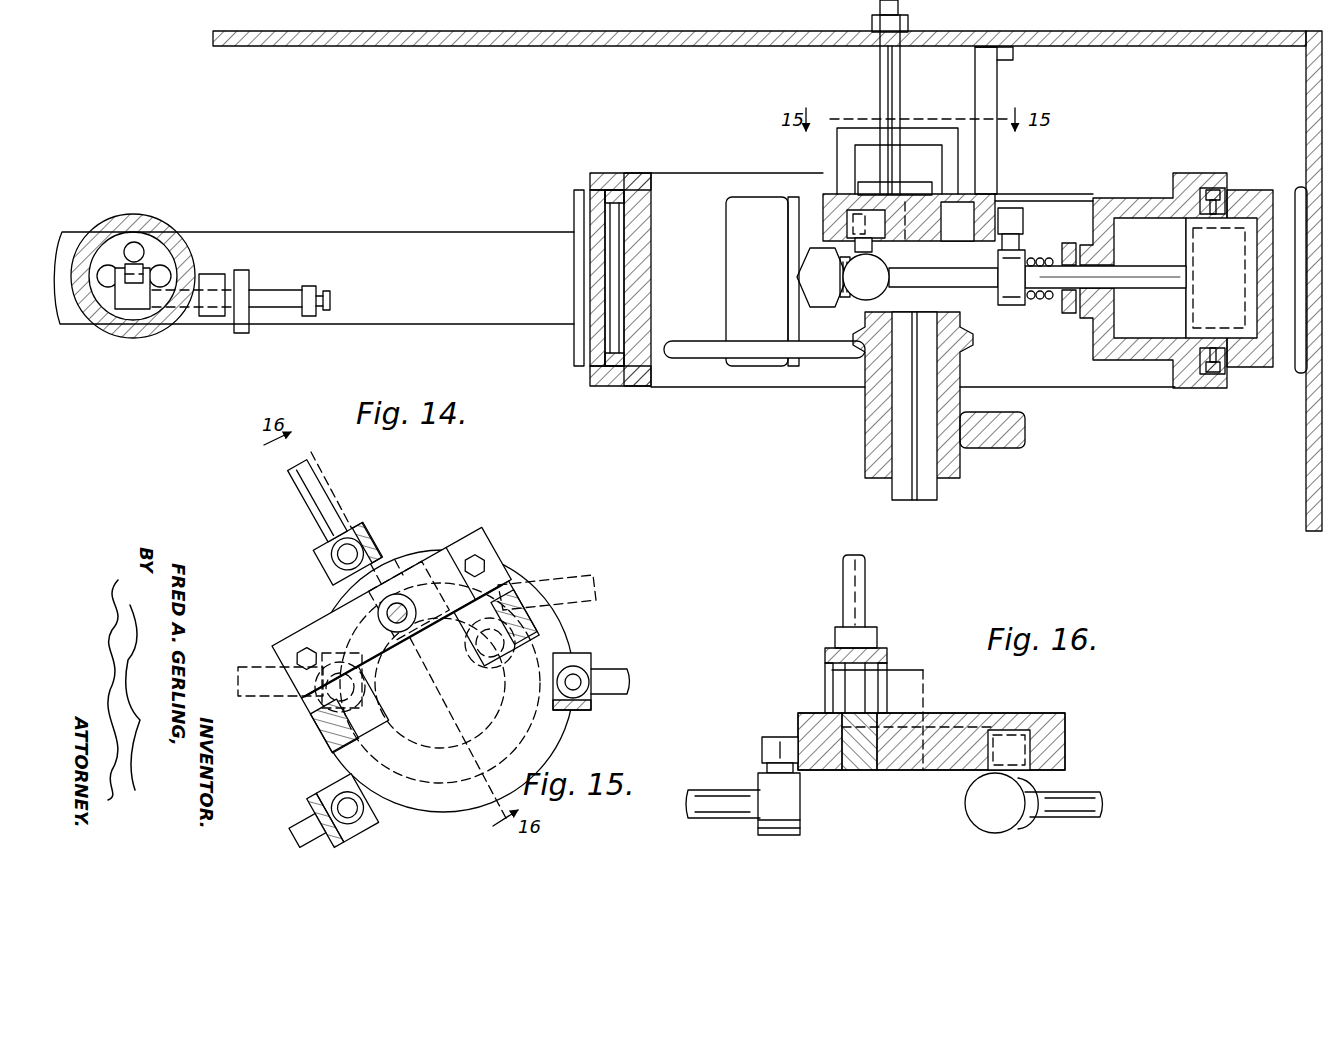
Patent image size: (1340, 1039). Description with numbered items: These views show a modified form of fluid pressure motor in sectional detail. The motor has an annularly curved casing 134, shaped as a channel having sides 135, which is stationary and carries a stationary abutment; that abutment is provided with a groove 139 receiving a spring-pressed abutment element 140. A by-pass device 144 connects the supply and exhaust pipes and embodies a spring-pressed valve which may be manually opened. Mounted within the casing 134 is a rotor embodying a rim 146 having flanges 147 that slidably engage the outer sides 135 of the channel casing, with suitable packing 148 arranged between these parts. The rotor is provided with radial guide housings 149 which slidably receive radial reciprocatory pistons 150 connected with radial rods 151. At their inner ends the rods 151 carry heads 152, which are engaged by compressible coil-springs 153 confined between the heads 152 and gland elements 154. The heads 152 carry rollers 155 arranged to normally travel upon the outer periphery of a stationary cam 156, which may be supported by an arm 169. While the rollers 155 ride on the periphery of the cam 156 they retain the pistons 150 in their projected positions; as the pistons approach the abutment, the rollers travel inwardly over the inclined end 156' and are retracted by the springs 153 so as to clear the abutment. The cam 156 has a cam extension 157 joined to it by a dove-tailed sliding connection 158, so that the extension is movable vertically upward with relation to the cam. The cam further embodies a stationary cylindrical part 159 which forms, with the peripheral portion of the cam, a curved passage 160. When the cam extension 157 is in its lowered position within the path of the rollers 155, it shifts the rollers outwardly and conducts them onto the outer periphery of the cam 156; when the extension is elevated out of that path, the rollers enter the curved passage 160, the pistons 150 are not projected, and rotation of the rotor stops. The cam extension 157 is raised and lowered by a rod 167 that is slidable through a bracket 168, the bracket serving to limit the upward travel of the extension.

In FIG. 14, the annularly curved casing 134 is at (1288, 330).
In FIG. 14, the sides of the casing 135 is at (1240, 197).
In FIG. 14, the groove 139 is at (610, 262).
In FIG. 14, the spring-pressed abutment element 140 is at (619, 296).
In FIG. 14, the by-pass device 144 is at (138, 221).
In FIG. 14, the rim 146 is at (640, 291).
In FIG. 14, the flanges 147 is at (608, 180).
In FIG. 14, the packing 148 is at (593, 377).
In FIG. 14, the radial guide housings 149 is at (1137, 350).
In FIG. 14, the radial reciprocatory pistons 150 is at (1221, 278).
In FIG. 14, the radial rods 151 is at (1150, 282).
In FIG. 15, the radial rods 151 is at (311, 512).
In FIG. 16, the radial rods 151 is at (703, 795).
In FIG. 14, the heads 152 is at (1000, 265).
In FIG. 15, the heads 152 is at (338, 575).
In FIG. 16, the heads 152 is at (800, 823).
In FIG. 14, the compressible coil-springs 153 is at (852, 284).
In FIG. 14, the gland elements 154 is at (1066, 300).
In FIG. 14, the rollers 155 is at (851, 227).
In FIG. 15, the rollers 155 is at (327, 555).
In FIG. 16, the rollers 155 is at (767, 748).
In FIG. 14, the stationary cam 156 is at (939, 194).
In FIG. 15, the stationary cam 156 is at (432, 669).
In FIG. 16, the stationary cam 156 is at (964, 720).
In FIG. 15, the inclined end 156' is at (399, 678).
In FIG. 15, the cam extension 157 is at (505, 585).
In FIG. 16, the cam extension 157 is at (877, 770).
In FIG. 15, the dove-tailed sliding connection 158 is at (403, 555).
In FIG. 16, the dove-tailed sliding connection 158 is at (835, 770).
In FIG. 14, the stationary cylindrical part 159 is at (903, 230).
In FIG. 16, the stationary cylindrical part 159 is at (950, 770).
In FIG. 14, the curved passage 160 is at (960, 230).
In FIG. 16, the curved passage 160 is at (1032, 730).
In FIG. 14, the rod 167 is at (902, 89).
In FIG. 15, the rod 167 is at (404, 623).
In FIG. 16, the rod 167 is at (860, 598).
In FIG. 14, the bracket 168 is at (844, 150).
In FIG. 15, the bracket 168 is at (385, 638).
In FIG. 16, the bracket 168 is at (888, 656).
In FIG. 14, the arm 169 is at (999, 89).